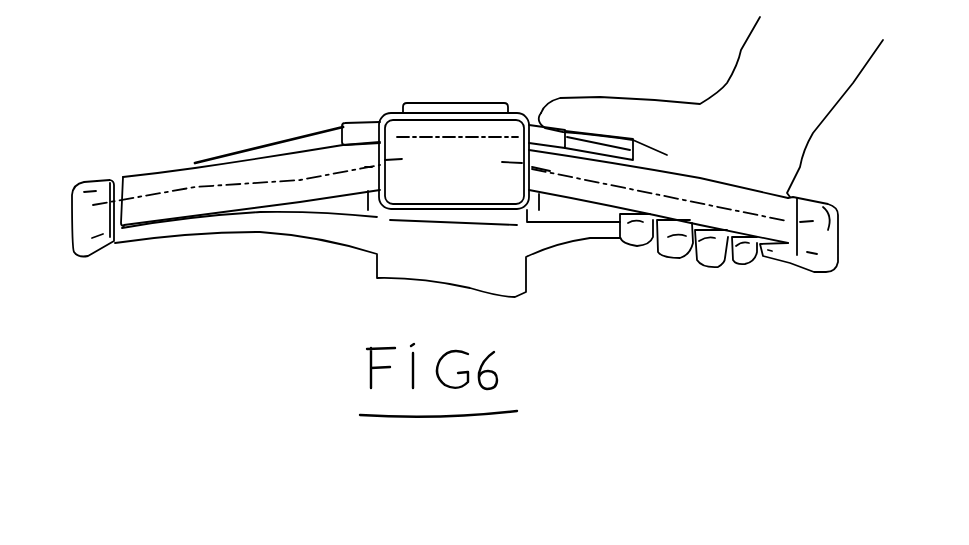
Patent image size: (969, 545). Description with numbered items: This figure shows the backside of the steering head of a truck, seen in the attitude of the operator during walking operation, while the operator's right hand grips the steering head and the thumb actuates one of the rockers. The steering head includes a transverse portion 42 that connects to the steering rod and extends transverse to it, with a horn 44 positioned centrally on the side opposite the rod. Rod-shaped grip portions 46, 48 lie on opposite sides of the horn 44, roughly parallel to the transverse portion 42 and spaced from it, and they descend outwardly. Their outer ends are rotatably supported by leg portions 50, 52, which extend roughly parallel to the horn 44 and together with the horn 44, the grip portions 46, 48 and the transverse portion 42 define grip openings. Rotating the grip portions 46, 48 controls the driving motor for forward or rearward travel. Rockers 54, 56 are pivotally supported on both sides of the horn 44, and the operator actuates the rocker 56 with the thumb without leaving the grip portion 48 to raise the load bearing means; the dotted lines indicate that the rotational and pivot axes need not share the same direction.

The transverse portion 42 is at (537, 240).
The horn 44 is at (380, 210).
The grip portion 46 is at (141, 178).
The grip portion 48 is at (578, 190).
The leg portion 50 is at (92, 186).
The leg portion 52 is at (838, 226).
The rocker 54 is at (358, 122).
The rocker 56 is at (540, 113).